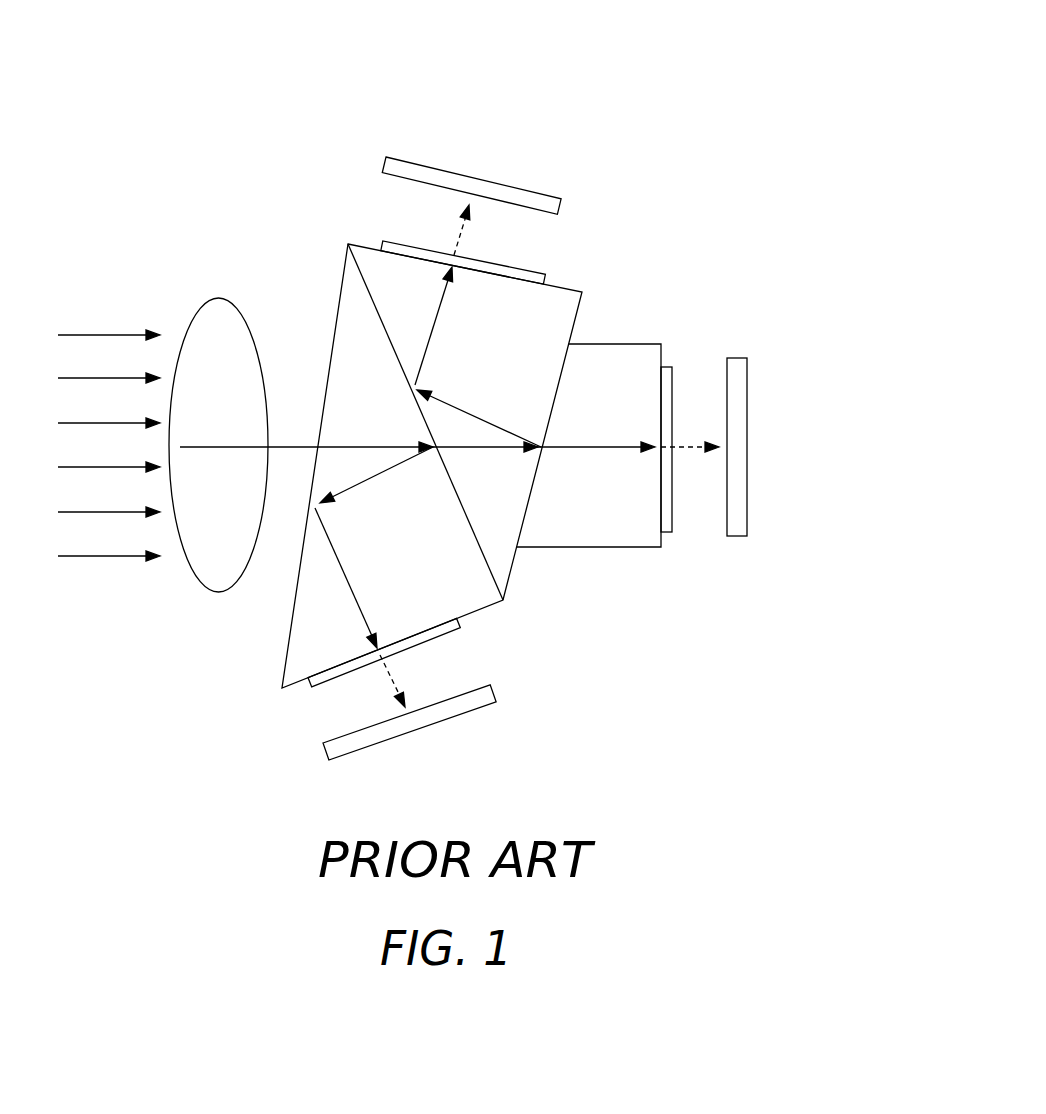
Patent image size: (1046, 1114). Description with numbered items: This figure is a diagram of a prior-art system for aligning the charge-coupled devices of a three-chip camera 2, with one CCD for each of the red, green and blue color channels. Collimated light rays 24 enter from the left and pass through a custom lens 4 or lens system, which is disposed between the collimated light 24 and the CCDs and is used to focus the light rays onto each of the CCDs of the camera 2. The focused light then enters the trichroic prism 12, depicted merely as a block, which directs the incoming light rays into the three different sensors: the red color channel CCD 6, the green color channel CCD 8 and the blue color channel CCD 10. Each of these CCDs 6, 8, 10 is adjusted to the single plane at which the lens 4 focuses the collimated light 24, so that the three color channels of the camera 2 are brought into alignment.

The 3CCD camera 2 is at (677, 602).
The custom lens 4 is at (222, 300).
The red color channel CCD 6 is at (440, 168).
The green color channel CCD 8 is at (747, 504).
The blue color channel CCD 10 is at (492, 690).
The trichroic prism 12 is at (611, 344).
The collimated light rays 24 is at (100, 558).